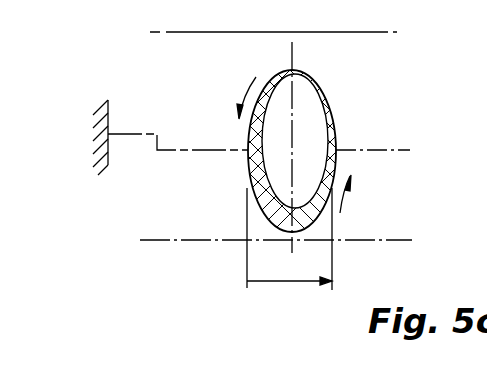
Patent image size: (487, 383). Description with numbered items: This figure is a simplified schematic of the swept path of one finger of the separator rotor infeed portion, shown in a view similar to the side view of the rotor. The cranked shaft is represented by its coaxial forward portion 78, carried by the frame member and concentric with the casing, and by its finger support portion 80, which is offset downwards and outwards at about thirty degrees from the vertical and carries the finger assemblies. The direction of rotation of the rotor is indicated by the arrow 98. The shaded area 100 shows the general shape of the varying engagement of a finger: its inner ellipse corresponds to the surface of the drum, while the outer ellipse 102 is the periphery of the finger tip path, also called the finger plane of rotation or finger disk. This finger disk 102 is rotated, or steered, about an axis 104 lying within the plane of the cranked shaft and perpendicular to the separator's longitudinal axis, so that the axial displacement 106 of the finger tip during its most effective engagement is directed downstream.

The forward portion 78 is at (121, 134).
The finger support portion 80 is at (389, 151).
The arrow 98 is at (280, 162).
The shaded area 100 is at (322, 213).
The finger plane of rotation 102 is at (266, 80).
The axis 104 is at (298, 45).
The axial displacement 106 is at (290, 282).